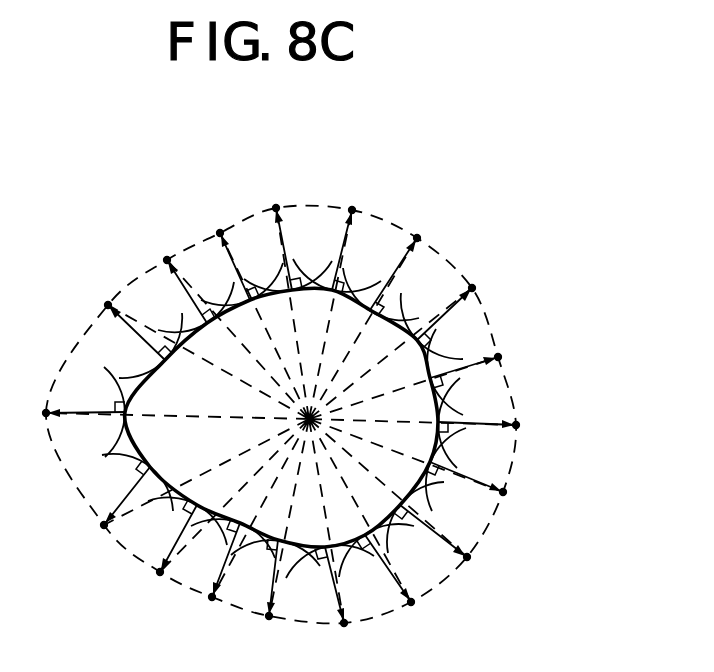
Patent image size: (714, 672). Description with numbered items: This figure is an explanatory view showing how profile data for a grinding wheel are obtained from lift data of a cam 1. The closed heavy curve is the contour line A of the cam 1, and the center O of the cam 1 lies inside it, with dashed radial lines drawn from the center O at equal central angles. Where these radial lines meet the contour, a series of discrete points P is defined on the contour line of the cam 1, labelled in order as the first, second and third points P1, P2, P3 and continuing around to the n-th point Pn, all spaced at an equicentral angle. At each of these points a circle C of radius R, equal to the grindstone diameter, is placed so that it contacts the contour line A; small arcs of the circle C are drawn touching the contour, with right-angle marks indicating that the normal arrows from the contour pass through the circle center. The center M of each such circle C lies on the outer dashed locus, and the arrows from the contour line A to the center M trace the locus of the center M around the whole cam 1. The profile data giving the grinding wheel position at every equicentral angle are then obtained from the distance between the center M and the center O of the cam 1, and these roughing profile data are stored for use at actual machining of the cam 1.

The cam 1 is at (453, 357).
The center of the cam O is at (281, 415).
The center of the circle M is at (444, 256).
The contour line A is at (418, 336).
The circle C is at (358, 283).
The discrete point P1 is at (519, 430).
The discrete point P2 is at (502, 362).
The discrete point P3 is at (476, 290).
The discrete point Pn is at (505, 496).
The discrete points P is at (257, 416).